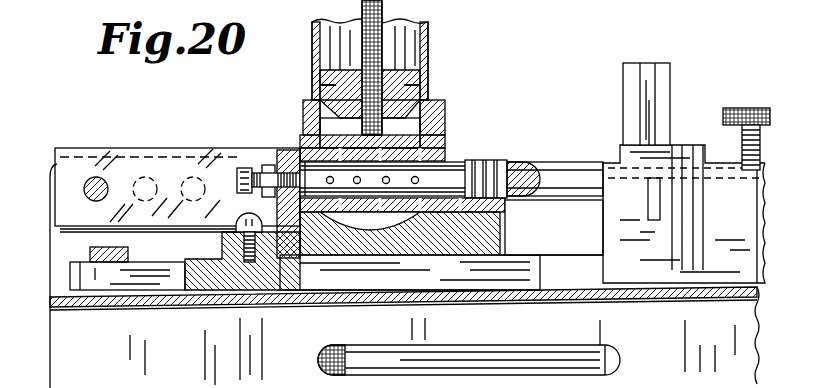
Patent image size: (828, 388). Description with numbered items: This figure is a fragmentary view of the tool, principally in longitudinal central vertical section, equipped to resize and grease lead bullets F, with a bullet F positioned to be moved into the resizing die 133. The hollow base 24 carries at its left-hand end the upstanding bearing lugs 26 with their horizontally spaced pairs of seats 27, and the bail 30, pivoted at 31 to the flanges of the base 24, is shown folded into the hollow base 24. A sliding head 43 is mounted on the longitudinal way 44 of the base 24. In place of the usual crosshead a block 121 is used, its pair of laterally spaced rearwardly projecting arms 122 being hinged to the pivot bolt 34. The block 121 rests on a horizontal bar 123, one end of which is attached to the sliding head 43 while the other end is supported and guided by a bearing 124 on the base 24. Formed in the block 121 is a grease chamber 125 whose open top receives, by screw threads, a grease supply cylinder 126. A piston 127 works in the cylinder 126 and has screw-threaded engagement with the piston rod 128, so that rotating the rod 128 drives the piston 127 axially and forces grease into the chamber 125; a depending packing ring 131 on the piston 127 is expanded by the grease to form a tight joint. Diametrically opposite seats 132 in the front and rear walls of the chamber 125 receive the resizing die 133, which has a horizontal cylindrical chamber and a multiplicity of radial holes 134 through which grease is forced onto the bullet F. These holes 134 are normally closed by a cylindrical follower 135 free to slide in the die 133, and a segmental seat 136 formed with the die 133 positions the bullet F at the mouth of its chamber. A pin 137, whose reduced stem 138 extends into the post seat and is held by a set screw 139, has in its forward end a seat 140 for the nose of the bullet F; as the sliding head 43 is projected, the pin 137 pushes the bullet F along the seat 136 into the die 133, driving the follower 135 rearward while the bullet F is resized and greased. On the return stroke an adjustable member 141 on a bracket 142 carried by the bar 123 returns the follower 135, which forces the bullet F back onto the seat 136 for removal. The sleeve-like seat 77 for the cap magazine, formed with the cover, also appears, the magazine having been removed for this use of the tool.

The hollow base 24 is at (217, 300).
The bearing lugs 26 is at (58, 264).
The seats 27 is at (160, 170).
The bail 30 is at (368, 355).
The pivot 31 is at (318, 364).
The pivot bolt 34 is at (84, 189).
The sliding head 43 is at (684, 214).
The longitudinal way 44 is at (551, 227).
The sleeve-like seat 77 is at (626, 129).
The block 121 is at (368, 248).
The arms 122 is at (233, 145).
The horizontal bar 123 is at (150, 282).
The bearing 124 is at (128, 249).
The grease chamber 125 is at (400, 233).
The grease supply cylinder 126 is at (405, 48).
The piston 127 is at (412, 78).
The piston rod 128 is at (380, 12).
The packing ring 131 is at (438, 116).
The seats 132 is at (305, 144).
The resizing die 133 is at (251, 219).
The radial holes 134 is at (398, 258).
The cylindrical follower 135 is at (437, 170).
The segmental seat 136 is at (508, 212).
The pin 137 is at (562, 171).
The reduced stem 138 is at (738, 180).
The set screw 139 is at (750, 103).
The seat 140 is at (511, 168).
The adjustable member 141 is at (234, 185).
The bracket 142 is at (263, 300).
The lead bullet F is at (438, 306).